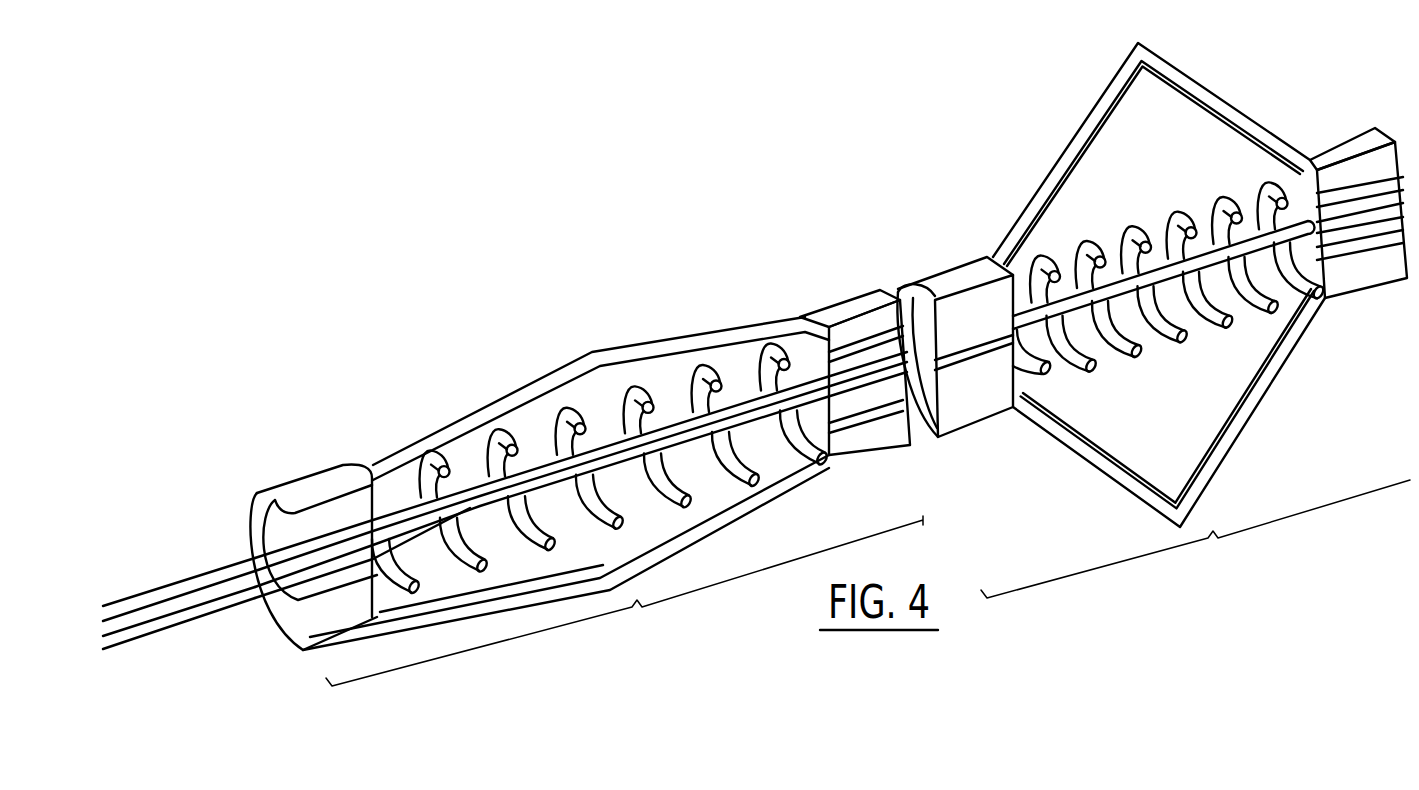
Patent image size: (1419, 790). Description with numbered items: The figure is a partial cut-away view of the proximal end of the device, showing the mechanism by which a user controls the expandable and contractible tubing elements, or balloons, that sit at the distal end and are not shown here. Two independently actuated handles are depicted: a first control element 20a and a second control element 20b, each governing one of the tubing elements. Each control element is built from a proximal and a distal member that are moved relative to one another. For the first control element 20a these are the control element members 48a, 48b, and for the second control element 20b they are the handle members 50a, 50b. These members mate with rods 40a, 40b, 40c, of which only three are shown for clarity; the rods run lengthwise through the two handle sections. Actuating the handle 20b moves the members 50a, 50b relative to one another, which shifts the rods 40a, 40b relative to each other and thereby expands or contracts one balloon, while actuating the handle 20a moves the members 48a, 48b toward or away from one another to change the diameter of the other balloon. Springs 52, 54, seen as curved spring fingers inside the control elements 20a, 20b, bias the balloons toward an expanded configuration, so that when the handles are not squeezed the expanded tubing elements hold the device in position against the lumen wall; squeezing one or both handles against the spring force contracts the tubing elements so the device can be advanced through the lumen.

The first control element 20a is at (1195, 320).
The second control element 20b is at (613, 501).
The rod 40a is at (545, 455).
The rod 40b is at (557, 487).
The rod 40c is at (197, 618).
The first proximal control element member 48a is at (1358, 283).
The first distal control element member 48b is at (992, 400).
The second proximal handle member 50a is at (872, 437).
The second distal handle member 50b is at (342, 617).
The spring 52 is at (1230, 200).
The spring 54 is at (697, 372).